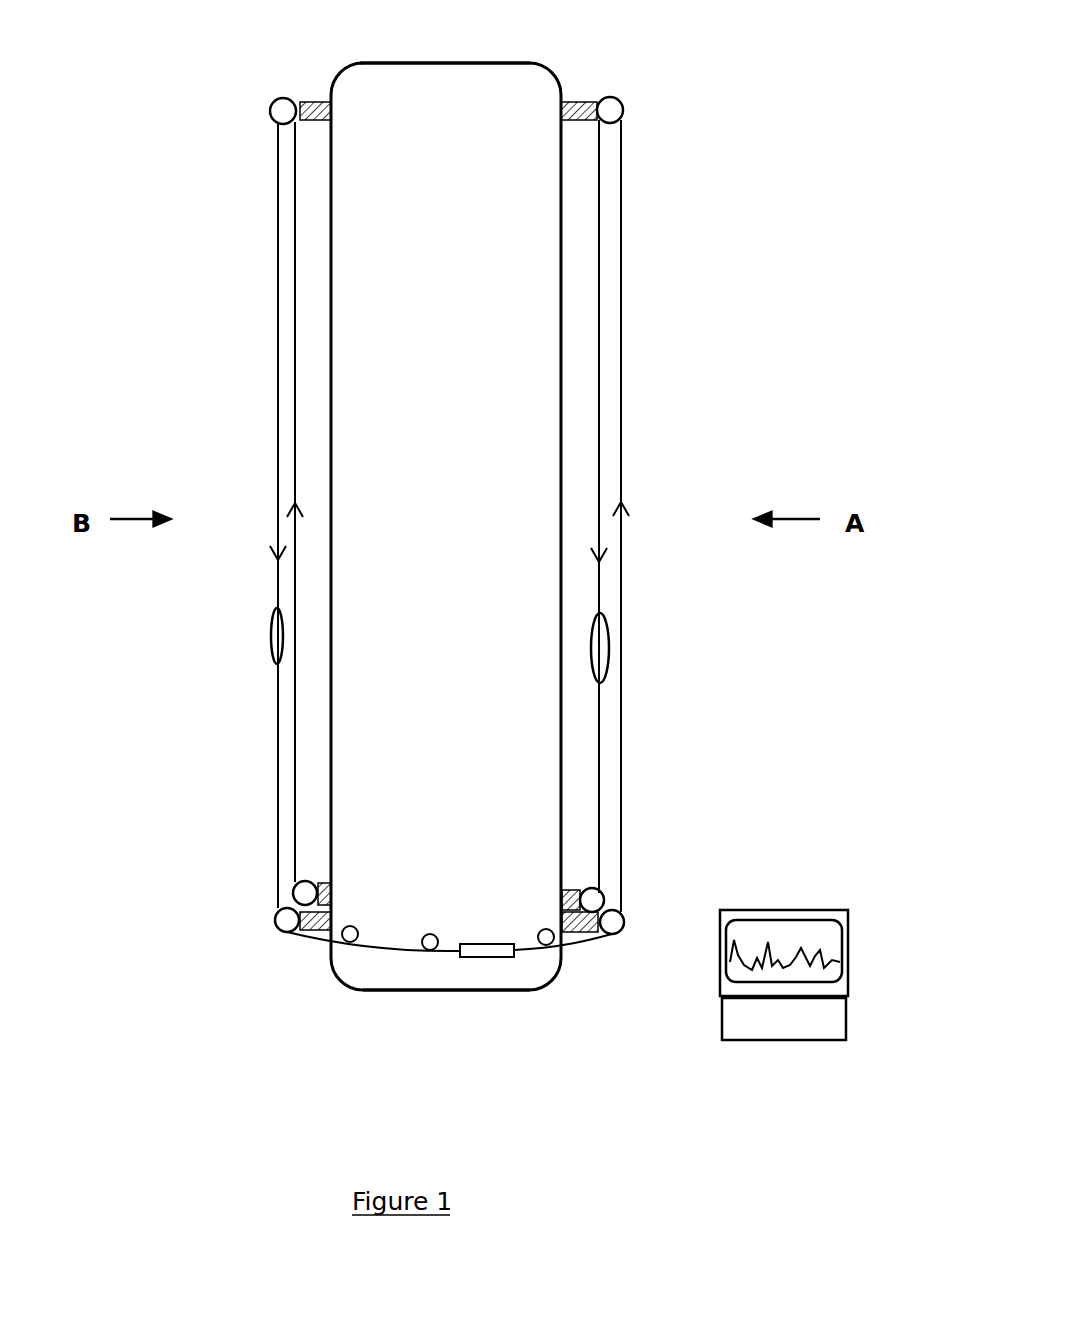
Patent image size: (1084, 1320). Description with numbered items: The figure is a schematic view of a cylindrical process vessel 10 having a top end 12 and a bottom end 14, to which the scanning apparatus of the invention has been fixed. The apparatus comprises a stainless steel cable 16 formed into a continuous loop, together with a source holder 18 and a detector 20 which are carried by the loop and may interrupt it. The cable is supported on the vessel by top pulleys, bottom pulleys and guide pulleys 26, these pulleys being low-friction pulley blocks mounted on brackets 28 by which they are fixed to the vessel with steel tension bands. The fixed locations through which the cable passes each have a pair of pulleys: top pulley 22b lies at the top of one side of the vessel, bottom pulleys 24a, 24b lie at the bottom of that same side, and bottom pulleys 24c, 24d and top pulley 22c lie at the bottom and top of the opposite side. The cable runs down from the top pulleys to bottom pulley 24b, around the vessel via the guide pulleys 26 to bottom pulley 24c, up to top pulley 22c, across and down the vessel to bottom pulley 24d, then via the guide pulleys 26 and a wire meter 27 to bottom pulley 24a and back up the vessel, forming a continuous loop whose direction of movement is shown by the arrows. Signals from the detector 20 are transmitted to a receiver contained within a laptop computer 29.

The process vessel 10 is at (462, 468).
The top end 12 is at (437, 63).
The bottom end 14 is at (448, 992).
The cable 16 is at (621, 320).
The source holder 18 is at (277, 636).
The detector 20 is at (600, 640).
The top pulley 22b is at (610, 110).
The top pulley 22c is at (283, 111).
The bottom pulley 24a is at (612, 922).
The bottom pulley 24b is at (592, 900).
The bottom pulley 24c is at (305, 893).
The bottom pulley 24d is at (287, 920).
The guide pulleys 26 is at (540, 929).
The wire meter 27 is at (490, 950).
The bracket 28 is at (312, 106).
The laptop computer 29 is at (858, 965).